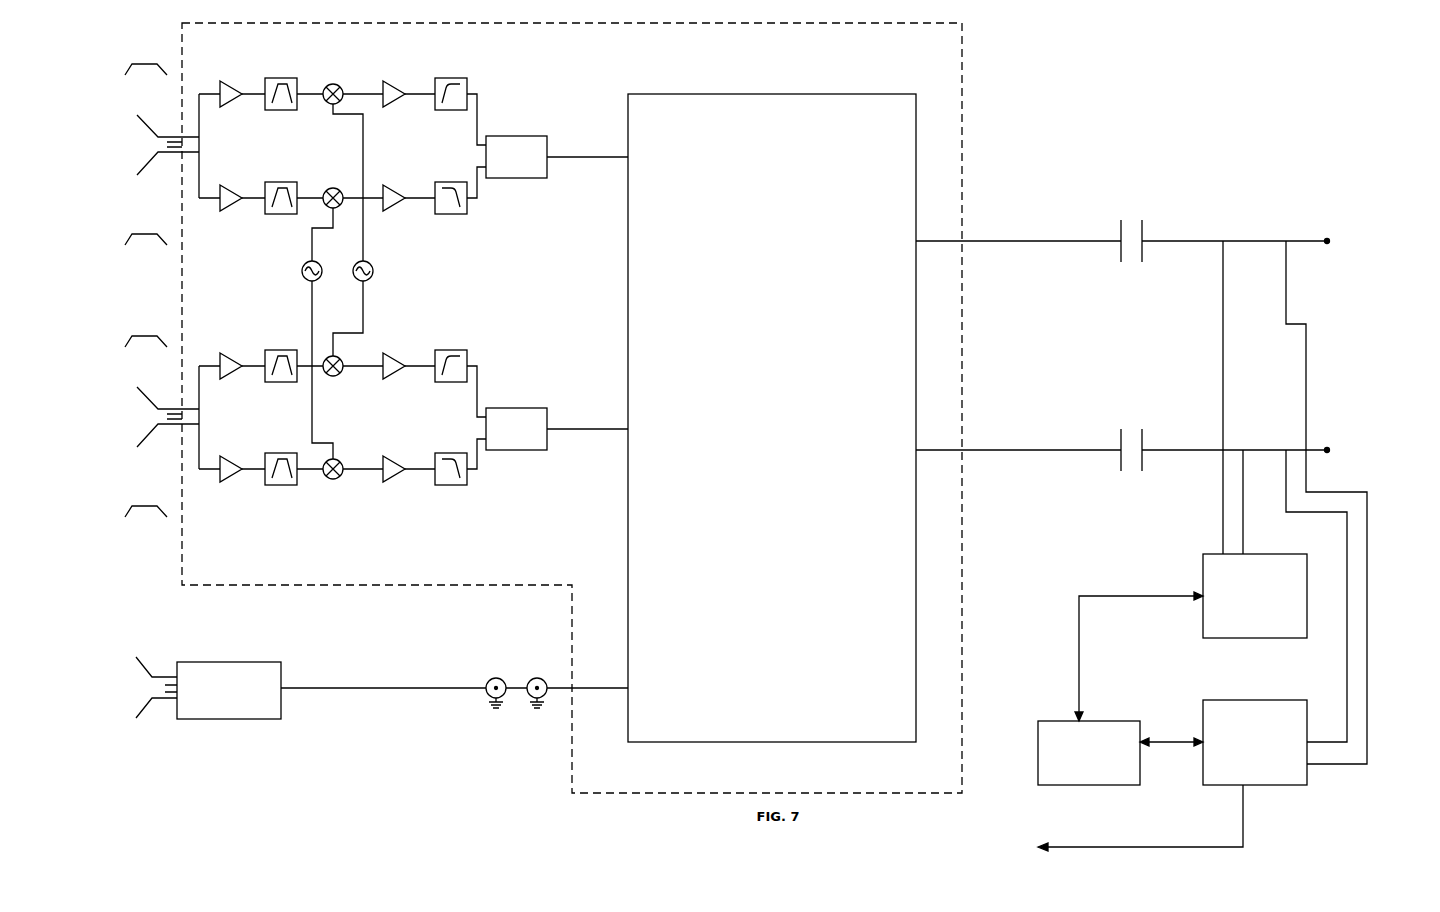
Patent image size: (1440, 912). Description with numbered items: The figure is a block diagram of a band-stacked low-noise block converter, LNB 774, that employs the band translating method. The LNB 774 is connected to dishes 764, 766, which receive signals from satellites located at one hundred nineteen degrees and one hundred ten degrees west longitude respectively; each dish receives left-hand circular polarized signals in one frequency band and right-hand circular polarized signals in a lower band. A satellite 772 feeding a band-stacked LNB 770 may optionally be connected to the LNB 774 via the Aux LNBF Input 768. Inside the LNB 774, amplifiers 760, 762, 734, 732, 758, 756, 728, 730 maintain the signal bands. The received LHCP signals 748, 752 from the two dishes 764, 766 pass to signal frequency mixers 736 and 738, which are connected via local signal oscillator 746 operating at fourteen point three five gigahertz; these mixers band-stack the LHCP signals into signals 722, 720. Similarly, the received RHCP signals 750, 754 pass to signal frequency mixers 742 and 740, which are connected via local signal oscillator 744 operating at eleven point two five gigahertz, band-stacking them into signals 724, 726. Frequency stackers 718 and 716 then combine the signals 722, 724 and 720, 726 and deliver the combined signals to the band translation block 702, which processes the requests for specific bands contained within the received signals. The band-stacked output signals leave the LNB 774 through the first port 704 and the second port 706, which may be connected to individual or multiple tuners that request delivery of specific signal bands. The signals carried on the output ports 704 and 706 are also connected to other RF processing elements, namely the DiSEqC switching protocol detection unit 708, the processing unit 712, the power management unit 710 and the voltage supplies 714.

The band translation block 702 is at (917, 410).
The port 1 704 is at (1377, 230).
The port 2 706 is at (1377, 438).
The DiSEqC 2.0/XMT switching protocol detection unit 708 is at (1202, 576).
The power management unit 710 is at (1258, 700).
The processing unit 712 is at (1037, 750).
The voltage supplies 714 is at (995, 826).
The frequency stacker 716 is at (513, 407).
The frequency stacker 718 is at (513, 135).
The signal 720 is at (450, 349).
The signal 722 is at (450, 77).
The signal 724 is at (450, 215).
The signal 726 is at (451, 486).
The amplifier 728 is at (388, 350).
The amplifier 730 is at (388, 480).
The amplifier 732 is at (388, 207).
The amplifier 734 is at (395, 78).
The signal frequency mixer 736 is at (339, 87).
The signal frequency mixer 738 is at (336, 380).
The signal frequency mixer 740 is at (336, 480).
The signal frequency mixer 742 is at (329, 188).
The local signal oscillator 744 is at (305, 280).
The local signal oscillator 746 is at (372, 282).
The received LHCP signal 748 is at (279, 76).
The received RHCP signal 750 is at (277, 215).
The received LHCP signal 752 is at (290, 350).
The received RHCP signal 754 is at (286, 486).
The amplifier 756 is at (230, 483).
The amplifier 758 is at (222, 353).
The amplifier 760 is at (222, 81).
The amplifier 762 is at (223, 207).
The dish 764 is at (122, 128).
The dish 766 is at (122, 400).
The Aux LNBF Input 768 is at (528, 682).
The band-stacked LNB 770 is at (226, 661).
The satellite 772 is at (110, 667).
The LNB 774 is at (964, 197).